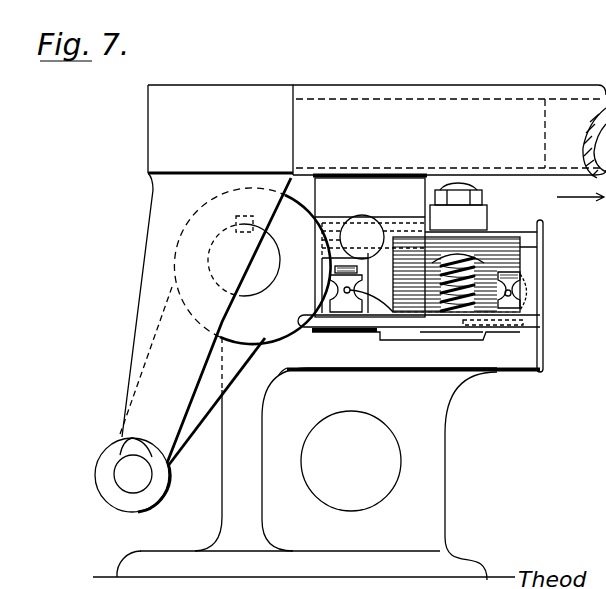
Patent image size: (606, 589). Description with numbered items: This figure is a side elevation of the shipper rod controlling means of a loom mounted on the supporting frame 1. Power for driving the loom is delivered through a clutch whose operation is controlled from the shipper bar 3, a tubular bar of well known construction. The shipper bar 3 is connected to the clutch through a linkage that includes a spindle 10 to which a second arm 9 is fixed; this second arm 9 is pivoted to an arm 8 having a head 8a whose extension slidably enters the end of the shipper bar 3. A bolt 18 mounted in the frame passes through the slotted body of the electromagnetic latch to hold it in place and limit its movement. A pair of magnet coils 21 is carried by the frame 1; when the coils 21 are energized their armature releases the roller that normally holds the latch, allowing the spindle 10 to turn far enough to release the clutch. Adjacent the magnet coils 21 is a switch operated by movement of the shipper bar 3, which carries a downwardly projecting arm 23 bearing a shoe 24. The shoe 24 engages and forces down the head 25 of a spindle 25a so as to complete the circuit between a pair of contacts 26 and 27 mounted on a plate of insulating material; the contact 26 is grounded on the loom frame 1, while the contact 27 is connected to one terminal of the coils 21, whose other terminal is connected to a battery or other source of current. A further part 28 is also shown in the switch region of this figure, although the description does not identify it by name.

The supporting frame 1 is at (318, 400).
The shipper bar 3 is at (570, 103).
The arm 8 is at (141, 291).
The head 8a is at (220, 130).
The second arm 9 is at (202, 422).
The spindle 10 is at (261, 283).
The bolt 18 is at (462, 195).
The magnet coils 21 is at (393, 288).
The downwardly projecting arm 23 is at (388, 188).
The shoe 24 is at (395, 262).
The head 25 is at (463, 255).
The spindle 25a is at (460, 293).
The contact 26 is at (483, 336).
The contact 27 is at (450, 341).
The contact 28 is at (465, 307).